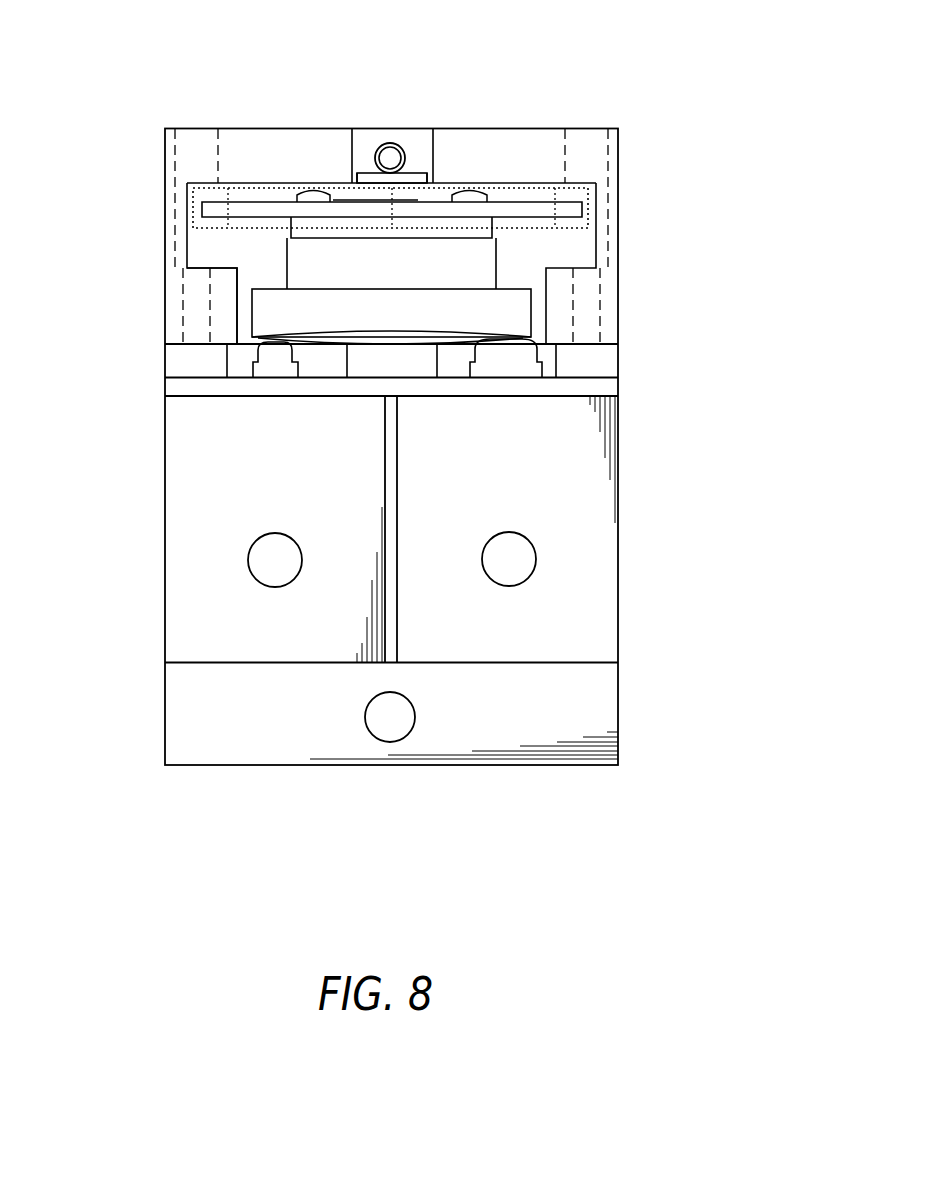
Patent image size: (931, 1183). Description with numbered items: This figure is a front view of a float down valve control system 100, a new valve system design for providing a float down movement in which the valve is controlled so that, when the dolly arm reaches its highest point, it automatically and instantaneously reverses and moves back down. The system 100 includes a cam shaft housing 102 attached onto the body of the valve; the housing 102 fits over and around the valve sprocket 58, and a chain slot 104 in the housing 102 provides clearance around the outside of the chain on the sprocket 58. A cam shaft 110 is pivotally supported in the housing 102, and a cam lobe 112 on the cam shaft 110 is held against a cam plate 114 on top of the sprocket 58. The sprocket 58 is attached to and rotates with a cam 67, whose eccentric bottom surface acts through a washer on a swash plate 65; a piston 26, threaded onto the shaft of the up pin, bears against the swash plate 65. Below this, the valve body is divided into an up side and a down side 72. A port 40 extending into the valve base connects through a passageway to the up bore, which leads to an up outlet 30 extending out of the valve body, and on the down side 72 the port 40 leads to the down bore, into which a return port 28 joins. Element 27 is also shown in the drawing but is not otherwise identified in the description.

The float down valve control system 100 is at (610, 89).
The cam shaft housing 102 is at (197, 153).
The chain slot 104 is at (235, 239).
The cam shaft 110 is at (397, 155).
The cam lobe 112 is at (428, 173).
The cam plate 114 is at (367, 177).
The valve sprocket 58 is at (537, 208).
The cam 67 is at (477, 270).
The swash plate 65 is at (513, 313).
The fastener 27 is at (522, 365).
The piston 26 is at (275, 355).
The down side 72 is at (636, 563).
The up outlet 30 is at (271, 560).
The return port 28 is at (508, 554).
The port 40 is at (396, 719).